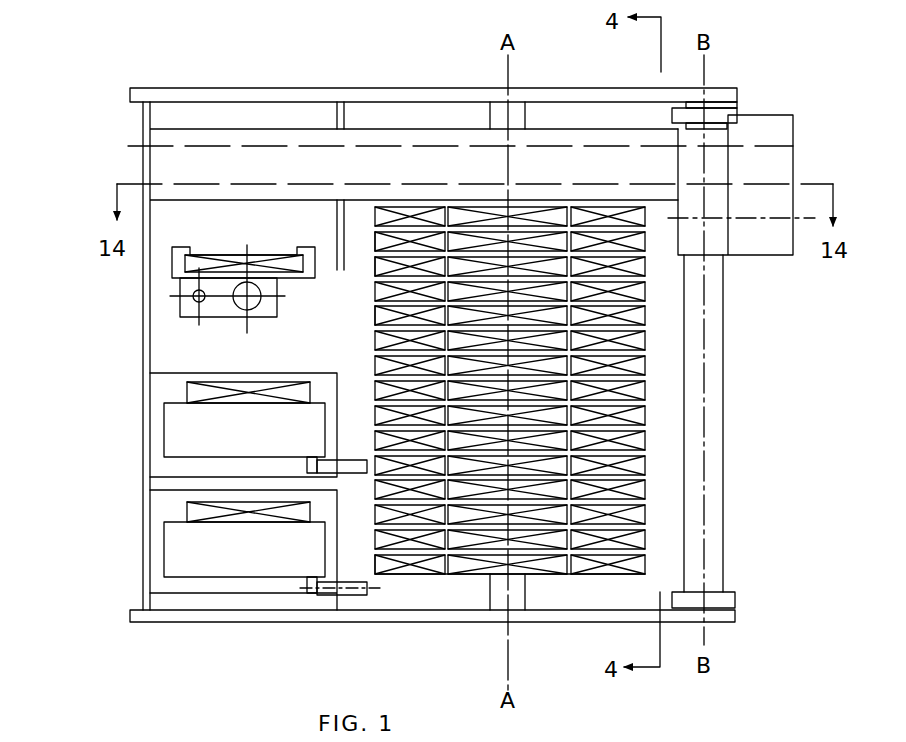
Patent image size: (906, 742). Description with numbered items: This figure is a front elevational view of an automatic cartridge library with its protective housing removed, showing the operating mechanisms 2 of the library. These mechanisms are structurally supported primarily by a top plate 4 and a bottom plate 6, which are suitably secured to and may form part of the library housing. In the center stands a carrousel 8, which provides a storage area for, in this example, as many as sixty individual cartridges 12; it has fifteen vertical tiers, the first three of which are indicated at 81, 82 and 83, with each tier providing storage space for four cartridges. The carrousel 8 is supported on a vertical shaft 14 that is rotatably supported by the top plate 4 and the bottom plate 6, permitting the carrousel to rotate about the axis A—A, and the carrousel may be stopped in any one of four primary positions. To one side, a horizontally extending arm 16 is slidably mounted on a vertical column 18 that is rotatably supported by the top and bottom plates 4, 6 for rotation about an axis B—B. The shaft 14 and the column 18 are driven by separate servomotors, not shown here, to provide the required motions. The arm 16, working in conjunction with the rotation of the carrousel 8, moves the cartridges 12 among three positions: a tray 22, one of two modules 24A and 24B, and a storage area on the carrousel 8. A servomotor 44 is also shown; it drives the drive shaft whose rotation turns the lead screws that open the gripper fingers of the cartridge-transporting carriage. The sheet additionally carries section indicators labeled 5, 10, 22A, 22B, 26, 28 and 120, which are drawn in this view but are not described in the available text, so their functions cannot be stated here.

The operating mechanisms of the library 2 is at (95, 190).
The top plate 4 is at (402, 100).
The section line 5- 5 is at (333, 58).
The bottom plate 6 is at (263, 606).
The carrousel 8 is at (527, 196).
The section line 10- 10 is at (372, 380).
The cartridge 12 is at (250, 257).
The vertical shaft 14 is at (515, 112).
The horizontally extending arm 16 is at (207, 133).
The vertical column 18 is at (724, 516).
The tray 22 is at (172, 256).
The bearing block 22A is at (165, 376).
The lower coil holder 22B is at (165, 508).
The module 24A is at (175, 426).
The module 24B is at (175, 556).
The upper bearing bracket 26 is at (737, 112).
The lower bearing foot 28 is at (730, 605).
The servomotor 44 is at (765, 245).
The vertical tier 81 is at (375, 248).
The vertical tier 82 is at (375, 272).
The vertical tier 83 is at (375, 318).
The coil stack 120 is at (472, 576).